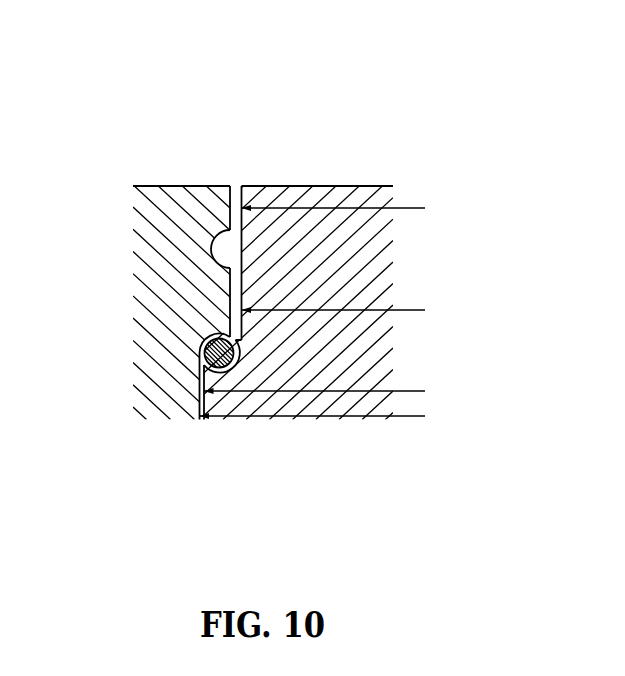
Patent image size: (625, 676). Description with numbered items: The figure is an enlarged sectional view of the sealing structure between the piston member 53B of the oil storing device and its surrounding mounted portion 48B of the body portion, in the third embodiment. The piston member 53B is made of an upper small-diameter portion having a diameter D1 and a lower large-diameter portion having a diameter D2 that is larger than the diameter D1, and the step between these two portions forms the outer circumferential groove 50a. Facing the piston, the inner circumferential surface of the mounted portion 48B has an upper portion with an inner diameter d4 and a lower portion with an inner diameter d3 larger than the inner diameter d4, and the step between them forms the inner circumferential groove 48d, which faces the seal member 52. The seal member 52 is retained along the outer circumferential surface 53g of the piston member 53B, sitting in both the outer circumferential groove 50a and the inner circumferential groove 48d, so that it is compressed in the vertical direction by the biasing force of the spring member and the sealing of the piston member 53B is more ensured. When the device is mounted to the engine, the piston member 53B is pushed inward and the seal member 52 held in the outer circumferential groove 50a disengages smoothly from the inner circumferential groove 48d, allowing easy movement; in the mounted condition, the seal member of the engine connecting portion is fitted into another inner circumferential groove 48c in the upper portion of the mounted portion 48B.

The mounted portion 48B is at (184, 186).
The piston member 53B is at (343, 178).
The inner circumferential groove 48c is at (221, 247).
The inner circumferential groove 48d is at (203, 337).
The seal member 52 is at (207, 357).
The outer circumferential groove 50a is at (214, 373).
The outer circumferential surface 53g is at (241, 284).
The inner diameter d4 is at (348, 208).
The diameter D1 is at (348, 310).
The diameter D2 is at (328, 391).
The inner diameter d3 is at (327, 416).